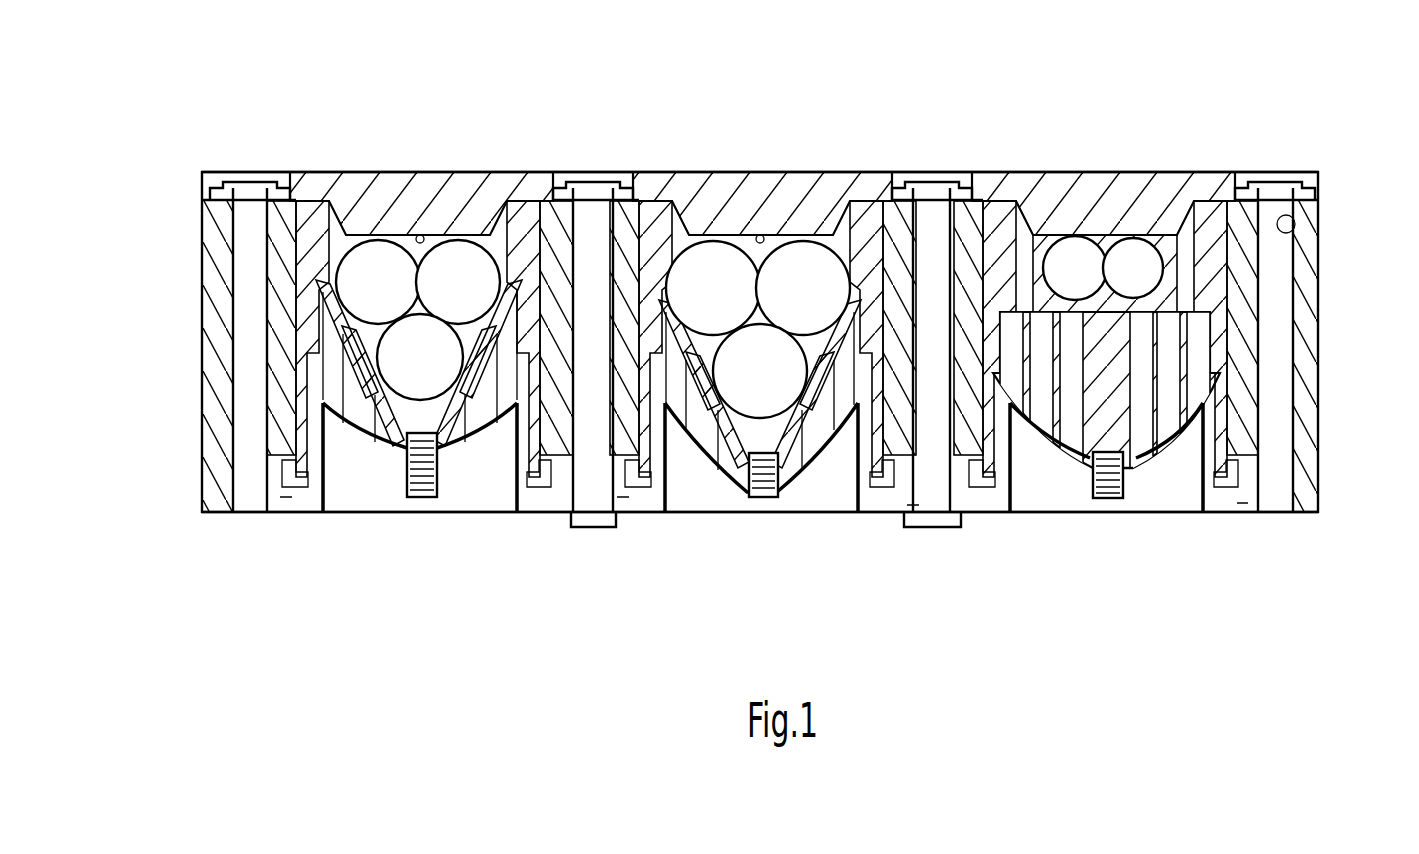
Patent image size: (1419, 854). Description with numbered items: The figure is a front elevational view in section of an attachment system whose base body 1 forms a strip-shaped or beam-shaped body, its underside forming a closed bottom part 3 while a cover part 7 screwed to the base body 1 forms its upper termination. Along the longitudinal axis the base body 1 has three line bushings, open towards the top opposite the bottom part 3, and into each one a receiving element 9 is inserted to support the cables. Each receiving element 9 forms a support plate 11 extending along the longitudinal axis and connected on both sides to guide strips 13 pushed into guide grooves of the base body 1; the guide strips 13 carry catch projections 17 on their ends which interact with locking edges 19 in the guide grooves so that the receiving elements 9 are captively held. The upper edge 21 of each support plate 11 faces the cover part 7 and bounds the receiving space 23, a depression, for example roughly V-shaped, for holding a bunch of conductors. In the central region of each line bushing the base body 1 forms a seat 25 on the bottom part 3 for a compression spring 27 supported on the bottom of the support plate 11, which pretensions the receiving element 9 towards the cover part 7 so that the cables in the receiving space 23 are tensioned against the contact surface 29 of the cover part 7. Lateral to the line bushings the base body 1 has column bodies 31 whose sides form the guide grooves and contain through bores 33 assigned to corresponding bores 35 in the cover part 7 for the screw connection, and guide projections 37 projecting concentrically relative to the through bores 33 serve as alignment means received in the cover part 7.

The base body 1 is at (1305, 380).
The bottom part 3 is at (1182, 495).
The cover part 7 is at (1180, 172).
The receiving element 9 is at (345, 172).
The support plate 11 is at (1177, 277).
The guide strip 13 is at (1225, 410).
The catch projection 17 is at (293, 482).
The locking edge 19 is at (265, 480).
The upper edge 21 is at (462, 330).
The receiving space 23 is at (822, 345).
The seat 25 is at (420, 497).
The compression spring 27 is at (395, 480).
The contact surface 29 is at (410, 235).
The column body 31 is at (218, 352).
The through bore 33 is at (240, 172).
The bore 35 is at (255, 182).
The guide projection 37 is at (628, 497).